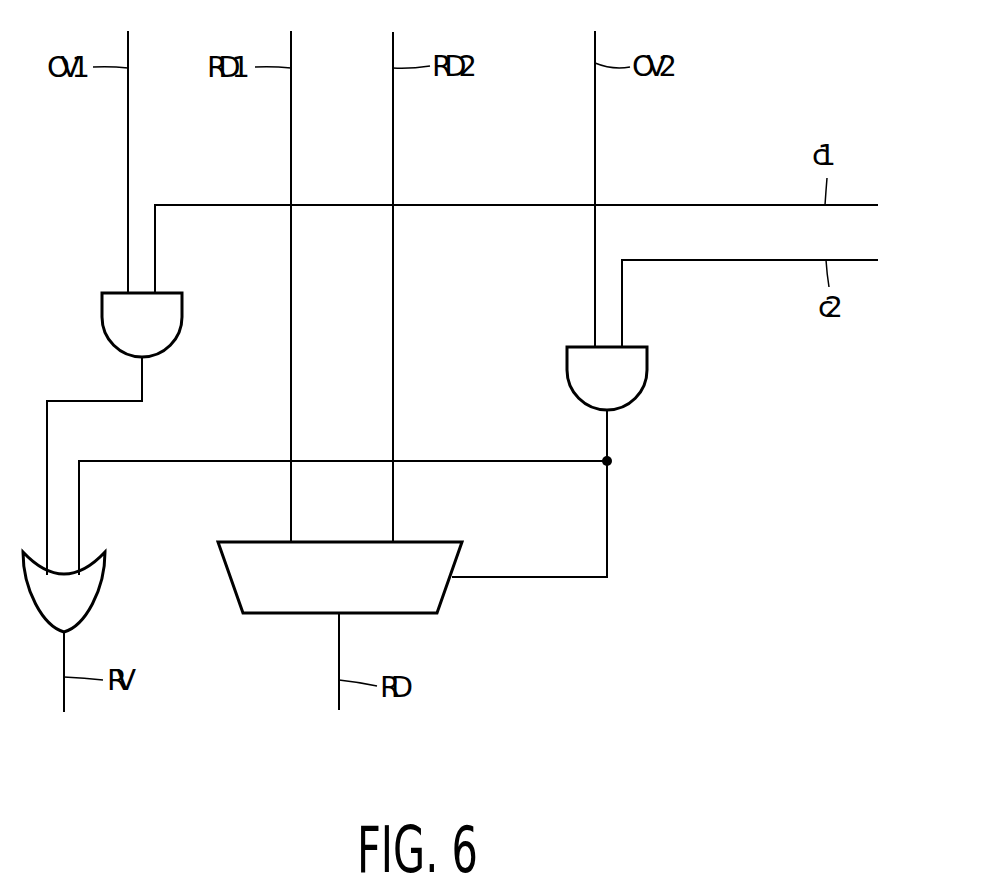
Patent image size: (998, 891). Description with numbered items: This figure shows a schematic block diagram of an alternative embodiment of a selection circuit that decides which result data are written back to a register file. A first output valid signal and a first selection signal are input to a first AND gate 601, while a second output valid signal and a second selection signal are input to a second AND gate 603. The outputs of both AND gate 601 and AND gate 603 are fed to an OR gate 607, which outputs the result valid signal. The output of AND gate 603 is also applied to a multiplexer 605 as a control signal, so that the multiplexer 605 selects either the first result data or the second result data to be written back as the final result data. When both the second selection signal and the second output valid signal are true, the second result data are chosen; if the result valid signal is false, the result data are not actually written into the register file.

The AND gate 601 is at (142, 325).
The AND gate 603 is at (607, 378).
The multiplexer 605 is at (340, 577).
The OR gate 607 is at (64, 592).